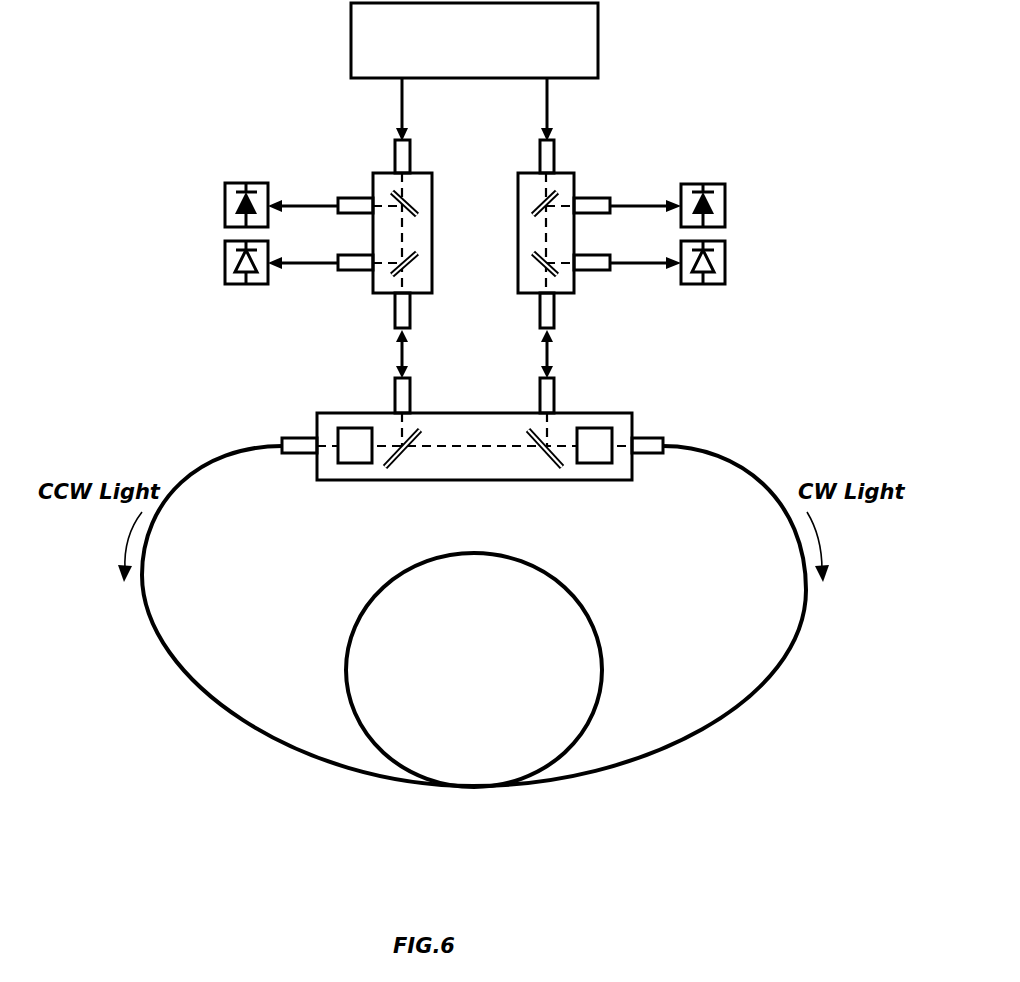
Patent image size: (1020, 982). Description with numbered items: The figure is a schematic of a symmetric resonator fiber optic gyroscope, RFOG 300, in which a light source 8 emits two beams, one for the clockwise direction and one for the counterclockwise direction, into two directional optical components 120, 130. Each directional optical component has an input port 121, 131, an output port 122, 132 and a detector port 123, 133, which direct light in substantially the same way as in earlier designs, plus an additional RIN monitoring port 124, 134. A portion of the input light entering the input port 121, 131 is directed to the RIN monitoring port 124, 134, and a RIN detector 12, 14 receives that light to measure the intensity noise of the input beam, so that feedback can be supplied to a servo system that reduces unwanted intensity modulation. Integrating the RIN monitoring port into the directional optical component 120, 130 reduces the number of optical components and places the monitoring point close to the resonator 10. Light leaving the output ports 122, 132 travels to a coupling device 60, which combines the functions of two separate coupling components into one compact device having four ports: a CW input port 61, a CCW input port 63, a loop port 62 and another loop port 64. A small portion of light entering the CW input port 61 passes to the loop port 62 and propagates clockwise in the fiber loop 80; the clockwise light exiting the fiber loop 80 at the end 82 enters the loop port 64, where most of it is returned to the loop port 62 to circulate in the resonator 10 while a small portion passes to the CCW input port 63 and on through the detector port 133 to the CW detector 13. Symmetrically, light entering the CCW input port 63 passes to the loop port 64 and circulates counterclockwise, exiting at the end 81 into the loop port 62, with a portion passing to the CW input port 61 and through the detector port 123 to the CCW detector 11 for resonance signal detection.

The light source 8 is at (598, 25).
The RFOG 300 is at (735, 122).
The directional optical component 130 is at (434, 195).
The input port 131 is at (395, 154).
The output port 132 is at (395, 312).
The detector port 133 is at (355, 197).
The RIN monitoring port 134 is at (355, 254).
The directional optical component 120 is at (516, 275).
The input port 121 is at (554, 154).
The output port 122 is at (554, 312).
The detector port 123 is at (597, 197).
The RIN monitoring port 124 is at (597, 254).
The CW detector 13 is at (225, 196).
The RIN detector 14 is at (225, 254).
The CCW detector 11 is at (725, 196).
The RIN detector 12 is at (725, 254).
The coupling device 60 is at (470, 482).
The CW input port 61 is at (556, 395).
The loop port 62 is at (650, 454).
The CCW input port 63 is at (395, 395).
The loop port 64 is at (295, 454).
The end 81 is at (700, 446).
The end 82 is at (254, 446).
The fiber loop 80 is at (575, 610).
The resonator 10 is at (474, 629).